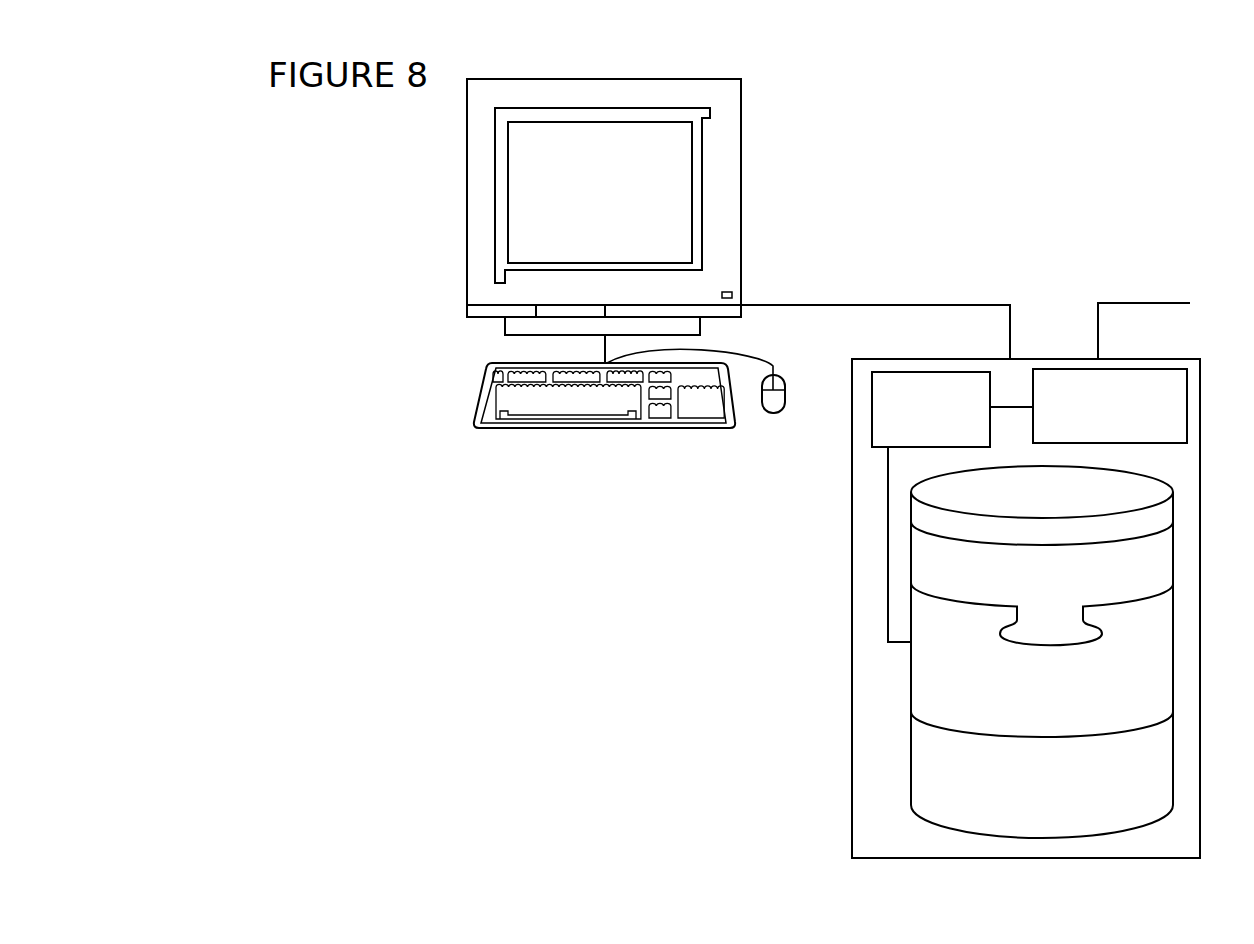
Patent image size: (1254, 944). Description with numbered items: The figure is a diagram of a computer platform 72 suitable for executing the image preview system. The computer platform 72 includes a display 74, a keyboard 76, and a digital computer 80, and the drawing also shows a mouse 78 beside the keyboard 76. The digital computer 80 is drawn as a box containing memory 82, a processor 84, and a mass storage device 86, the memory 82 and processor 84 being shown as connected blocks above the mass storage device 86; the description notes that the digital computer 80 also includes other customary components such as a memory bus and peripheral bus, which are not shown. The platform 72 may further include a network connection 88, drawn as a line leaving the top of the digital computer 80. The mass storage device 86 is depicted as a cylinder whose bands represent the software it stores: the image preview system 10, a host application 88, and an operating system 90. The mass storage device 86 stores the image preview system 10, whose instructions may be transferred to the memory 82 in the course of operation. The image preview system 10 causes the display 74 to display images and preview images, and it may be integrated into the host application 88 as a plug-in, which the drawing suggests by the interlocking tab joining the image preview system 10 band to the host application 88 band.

The computer platform 72 is at (815, 80).
The display 74 is at (741, 192).
The keyboard 76 is at (612, 430).
The mouse 78 is at (788, 389).
The digital computer 80 is at (1029, 358).
The memory 82 is at (908, 372).
The processor 84 is at (1127, 369).
The mass storage device 86 is at (1113, 463).
The image preview system 10 is at (1176, 546).
The host application 88 is at (1116, 303).
The operating system 90 is at (1177, 779).